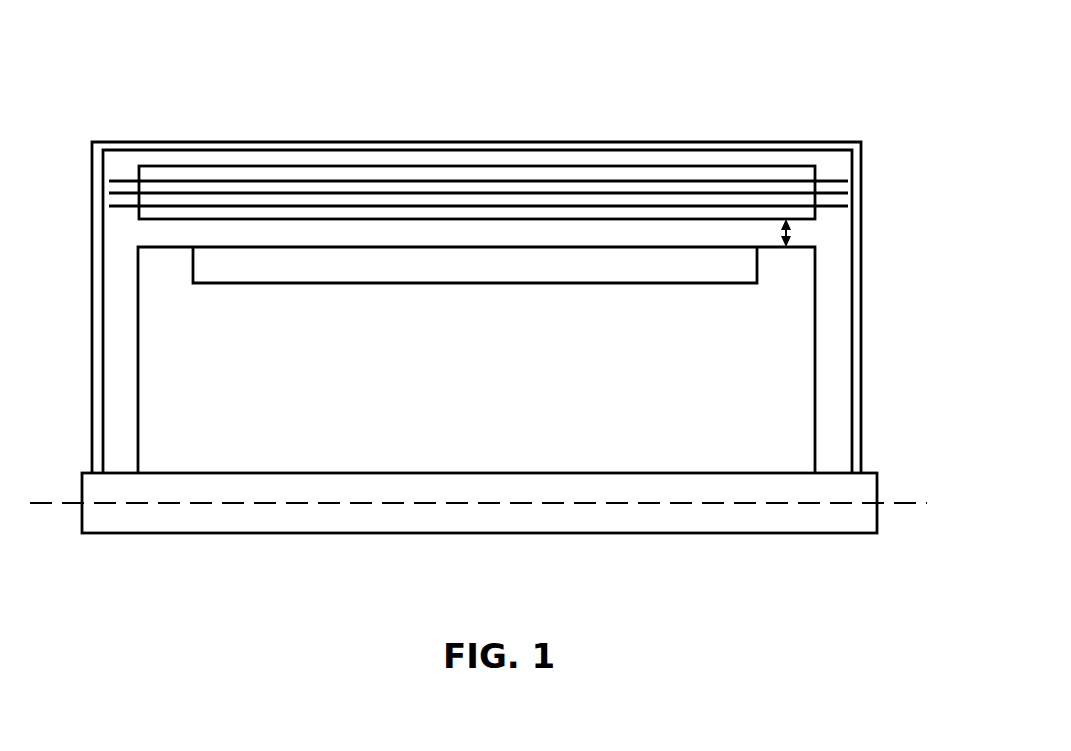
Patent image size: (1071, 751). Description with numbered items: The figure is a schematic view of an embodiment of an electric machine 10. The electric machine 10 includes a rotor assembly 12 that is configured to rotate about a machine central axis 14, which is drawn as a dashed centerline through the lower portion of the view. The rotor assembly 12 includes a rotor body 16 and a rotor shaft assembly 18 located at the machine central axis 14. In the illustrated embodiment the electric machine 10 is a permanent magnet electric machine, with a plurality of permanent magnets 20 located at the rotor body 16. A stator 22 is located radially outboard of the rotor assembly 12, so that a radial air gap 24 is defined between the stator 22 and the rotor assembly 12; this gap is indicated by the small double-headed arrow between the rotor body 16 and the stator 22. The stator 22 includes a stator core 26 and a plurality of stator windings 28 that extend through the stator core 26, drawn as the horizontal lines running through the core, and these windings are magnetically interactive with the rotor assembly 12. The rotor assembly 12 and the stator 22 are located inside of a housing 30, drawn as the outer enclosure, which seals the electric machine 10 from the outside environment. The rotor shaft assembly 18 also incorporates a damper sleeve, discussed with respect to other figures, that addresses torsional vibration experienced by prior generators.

The electric machine 10 is at (872, 57).
The rotor assembly 12 is at (780, 403).
The machine central axis 14 is at (287, 503).
The rotor body 16 is at (163, 378).
The rotor shaft assembly 18 is at (622, 517).
The permanent magnets 20 is at (498, 278).
The stator 22 is at (852, 128).
The radial air gap 24 is at (790, 236).
The stator core 26 is at (575, 165).
The stator windings 28 is at (360, 180).
The housing 30 is at (240, 142).